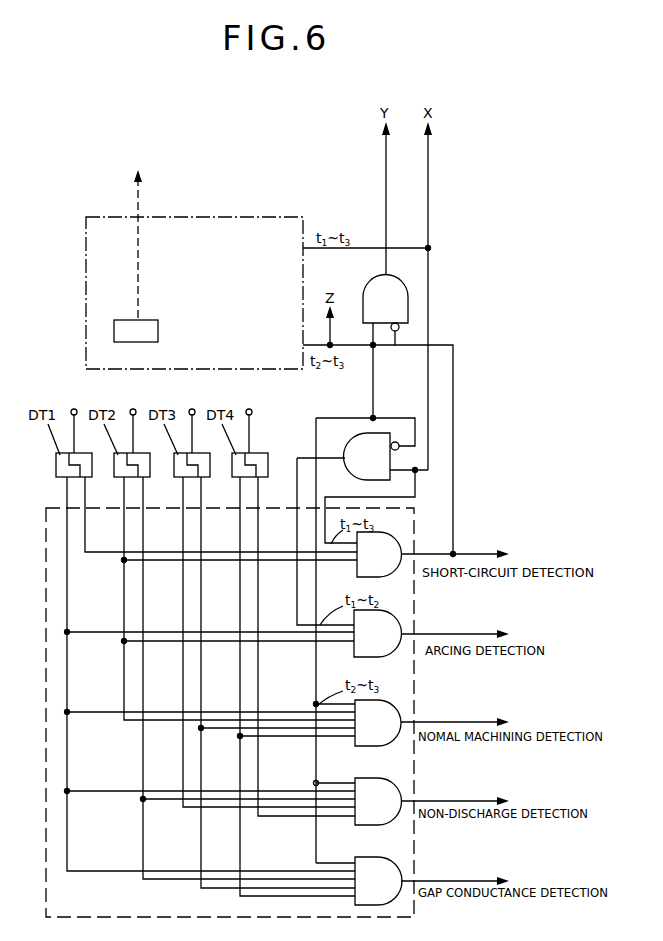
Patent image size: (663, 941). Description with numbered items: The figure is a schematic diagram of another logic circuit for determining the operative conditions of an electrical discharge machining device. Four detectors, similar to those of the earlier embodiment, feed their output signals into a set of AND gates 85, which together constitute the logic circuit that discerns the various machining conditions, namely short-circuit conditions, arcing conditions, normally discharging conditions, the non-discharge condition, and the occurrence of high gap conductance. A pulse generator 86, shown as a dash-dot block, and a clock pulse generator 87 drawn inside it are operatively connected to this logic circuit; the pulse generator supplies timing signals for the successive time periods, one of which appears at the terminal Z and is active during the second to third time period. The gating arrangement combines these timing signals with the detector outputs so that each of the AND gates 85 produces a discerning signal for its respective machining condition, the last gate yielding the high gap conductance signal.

The AND gates 85 is at (431, 718).
The pulse generator 86 is at (218, 216).
The clock pulse generator 87 is at (150, 331).